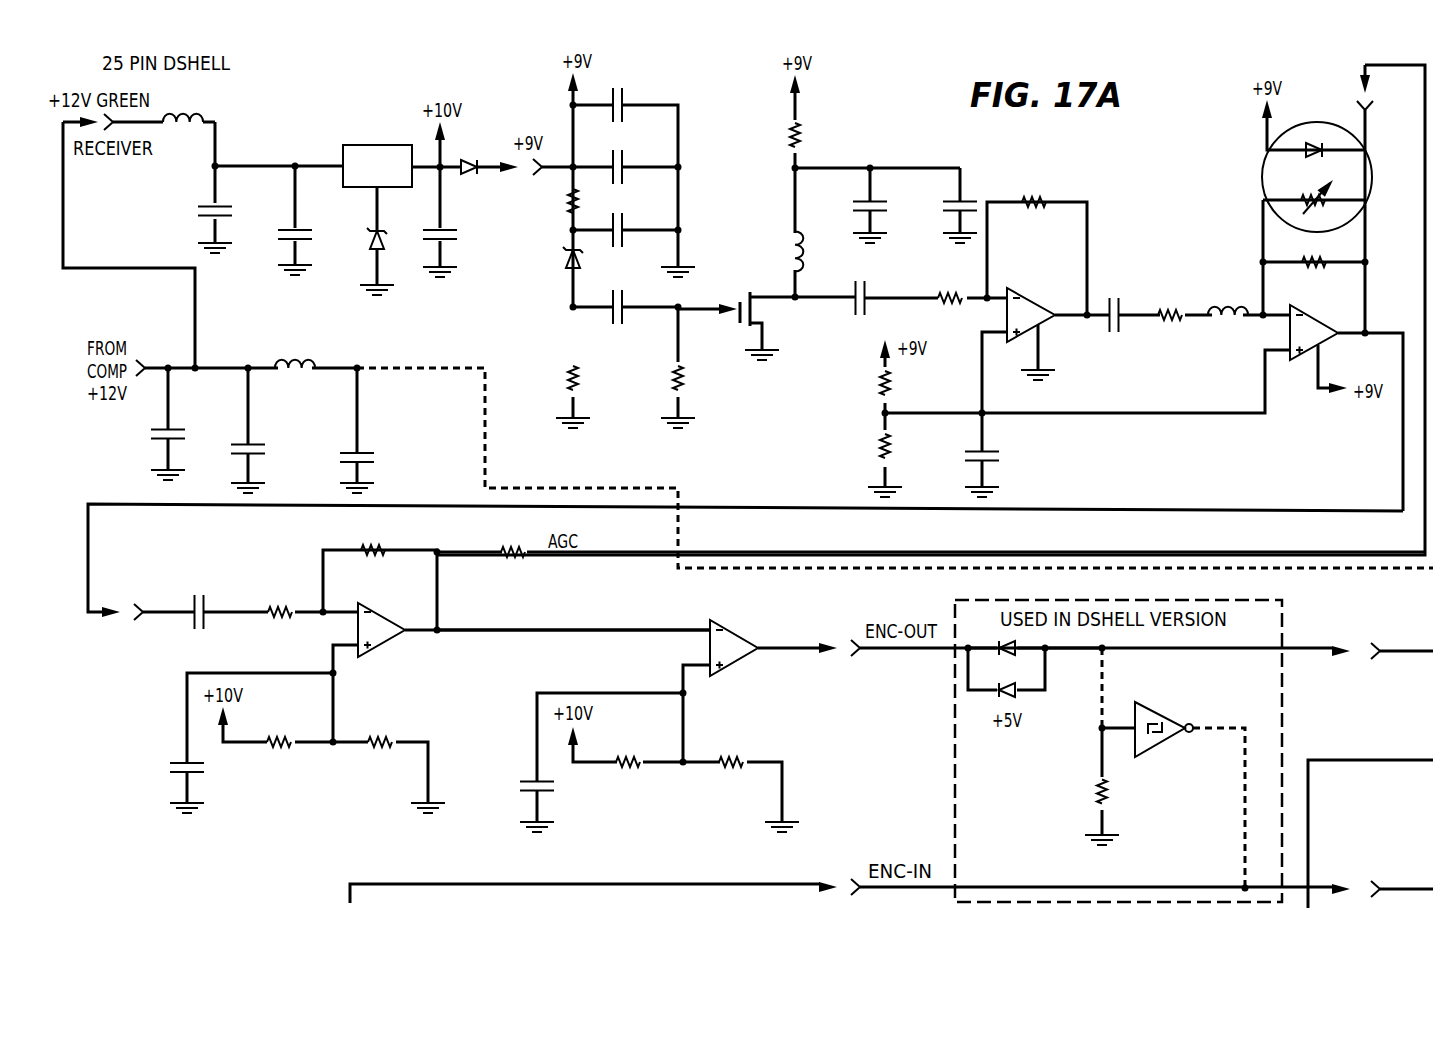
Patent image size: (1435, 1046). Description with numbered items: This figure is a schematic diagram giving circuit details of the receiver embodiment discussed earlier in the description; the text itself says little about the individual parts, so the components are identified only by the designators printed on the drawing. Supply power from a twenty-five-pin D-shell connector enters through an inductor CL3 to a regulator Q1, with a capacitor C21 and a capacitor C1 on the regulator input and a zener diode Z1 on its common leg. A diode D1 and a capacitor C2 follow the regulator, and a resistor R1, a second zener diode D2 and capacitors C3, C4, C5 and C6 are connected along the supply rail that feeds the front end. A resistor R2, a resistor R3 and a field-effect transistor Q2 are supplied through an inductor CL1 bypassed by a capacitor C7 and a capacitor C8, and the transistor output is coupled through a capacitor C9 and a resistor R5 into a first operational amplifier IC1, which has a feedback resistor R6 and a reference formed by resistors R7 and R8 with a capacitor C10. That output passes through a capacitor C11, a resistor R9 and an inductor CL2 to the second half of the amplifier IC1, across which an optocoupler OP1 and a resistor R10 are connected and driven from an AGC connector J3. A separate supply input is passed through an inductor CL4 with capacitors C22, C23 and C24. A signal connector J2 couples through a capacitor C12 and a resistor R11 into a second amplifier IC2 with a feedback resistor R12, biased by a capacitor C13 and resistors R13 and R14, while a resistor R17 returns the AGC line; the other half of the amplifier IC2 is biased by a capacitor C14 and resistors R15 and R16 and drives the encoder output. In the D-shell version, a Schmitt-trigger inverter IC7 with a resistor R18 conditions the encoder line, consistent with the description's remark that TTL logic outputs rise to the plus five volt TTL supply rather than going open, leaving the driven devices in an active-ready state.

The inductor 1mH CL3 is at (183, 125).
The capacitor 10uF C21 is at (193, 220).
The capacitor .01uF C1 is at (276, 226).
The 7805 voltage regulator Q1 is at (377, 153).
The zener diode 5.1V Z1 is at (358, 258).
The diode D1 is at (470, 153).
The capacitor .01uF C2 is at (468, 243).
The resistor 2.2K R1 is at (550, 204).
The zener diode D2 is at (561, 259).
The capacitor .01uF C3 is at (645, 103).
The capacitor 10uF C4 is at (640, 165).
The capacitor 10uF C5 is at (640, 228).
The capacitor 680pF C6 is at (645, 307).
The resistor R2 is at (660, 259).
The resistor 1MEG R3 is at (654, 378).
The JFET MPF102 Q2 is at (767, 307).
The inductor .820mH CL1 is at (760, 253).
The capacitor 10uF C7 is at (848, 212).
The capacitor .01uF C8 is at (934, 212).
The capacitor 20pF C9 is at (883, 297).
The resistor 2.2K R5 is at (952, 300).
The resistor 100K R6 is at (1033, 187).
The op amp AD827 IC1 is at (1176, 313).
The resistor 22K R7 is at (866, 385).
The resistor 22K R8 is at (872, 460).
The capacitor .01uF C10 is at (955, 465).
The capacitor .01uF C11 is at (1114, 320).
The resistor 470 R9 is at (1173, 318).
The inductor 680uH CL2 is at (1227, 316).
The resistor 22K R10 is at (1317, 265).
The optocoupler CLM6000 OP1 is at (1278, 166).
The AGC connector J3 is at (1382, 97).
The inductor 1mH CL4 is at (295, 372).
The capacitor .01uF C22 is at (141, 446).
The capacitor 100uF C23 is at (230, 443).
The capacitor 220uF C24 is at (337, 446).
The signal connector J2 is at (128, 612).
The capacitor .01uF C12 is at (204, 615).
The resistor 470 ohm R11 is at (284, 614).
The resistor 10K R12 is at (376, 551).
The op amp IC2 is at (561, 639).
The capacitor .01uF C13 is at (164, 779).
The resistor 15K R13 is at (280, 743).
The resistor 22K R14 is at (382, 743).
The resistor 100 R17 is at (516, 550).
The capacitor .01uF C14 is at (514, 798).
The resistor 22K R15 is at (631, 763).
The resistor 22K R16 is at (734, 763).
The schmitt inverter 7414 IC7 is at (1162, 732).
The resistor 470 ohm R18 is at (1084, 808).